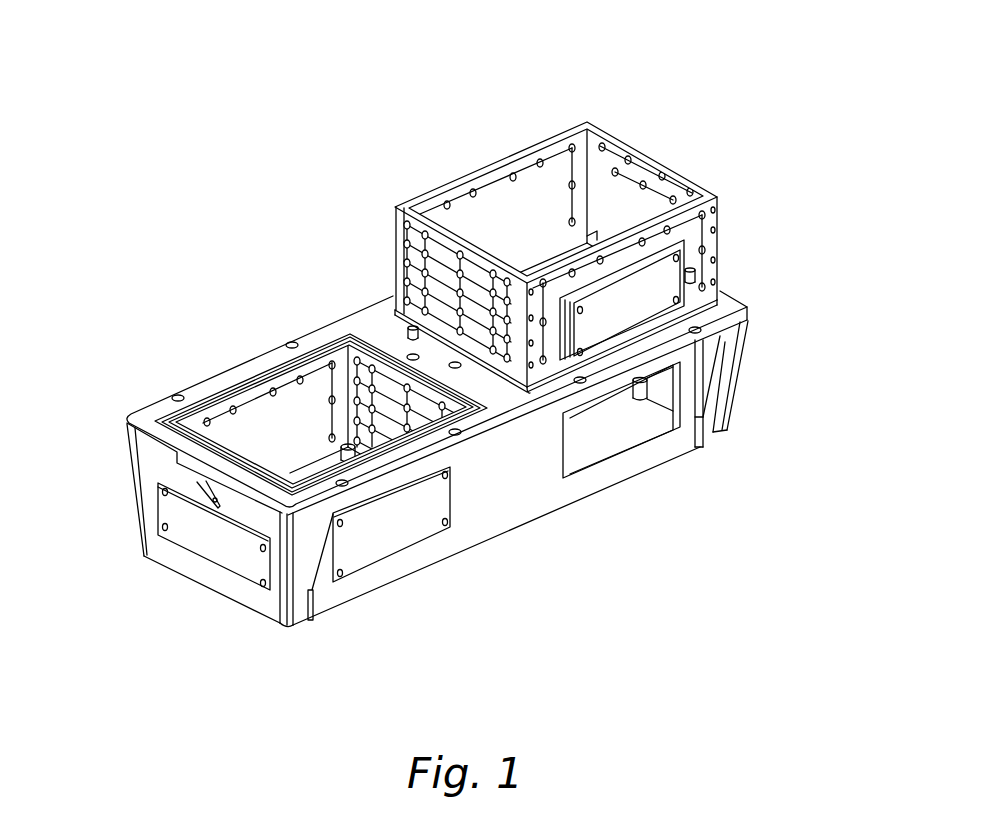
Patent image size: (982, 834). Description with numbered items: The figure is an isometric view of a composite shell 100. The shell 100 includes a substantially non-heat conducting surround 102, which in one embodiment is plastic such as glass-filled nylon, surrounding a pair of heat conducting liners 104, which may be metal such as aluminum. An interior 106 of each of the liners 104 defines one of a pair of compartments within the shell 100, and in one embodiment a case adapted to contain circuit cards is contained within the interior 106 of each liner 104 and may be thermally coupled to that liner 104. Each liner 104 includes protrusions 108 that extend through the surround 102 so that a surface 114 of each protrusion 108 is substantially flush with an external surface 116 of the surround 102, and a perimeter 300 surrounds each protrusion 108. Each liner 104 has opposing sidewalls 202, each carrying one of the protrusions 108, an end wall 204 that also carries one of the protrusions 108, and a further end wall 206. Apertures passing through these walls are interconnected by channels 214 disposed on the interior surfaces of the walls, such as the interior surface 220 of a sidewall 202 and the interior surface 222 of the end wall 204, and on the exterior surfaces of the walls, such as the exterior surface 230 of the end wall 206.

The composite shell 100 is at (732, 70).
The surround 102 is at (537, 507).
The heat conducting liner 104 is at (602, 128).
The interior 106 is at (520, 212).
The protrusion 108 is at (663, 273).
The surface 114 is at (638, 292).
The external surface 116 is at (157, 553).
The sidewall 202 is at (567, 127).
The end wall 204 is at (695, 172).
The end wall 206 is at (413, 212).
The channel 214 is at (553, 147).
The interior surface 220 is at (460, 213).
The interior surface 222 is at (607, 183).
The exterior surface 230 is at (437, 293).
The perimeter 300 is at (713, 226).